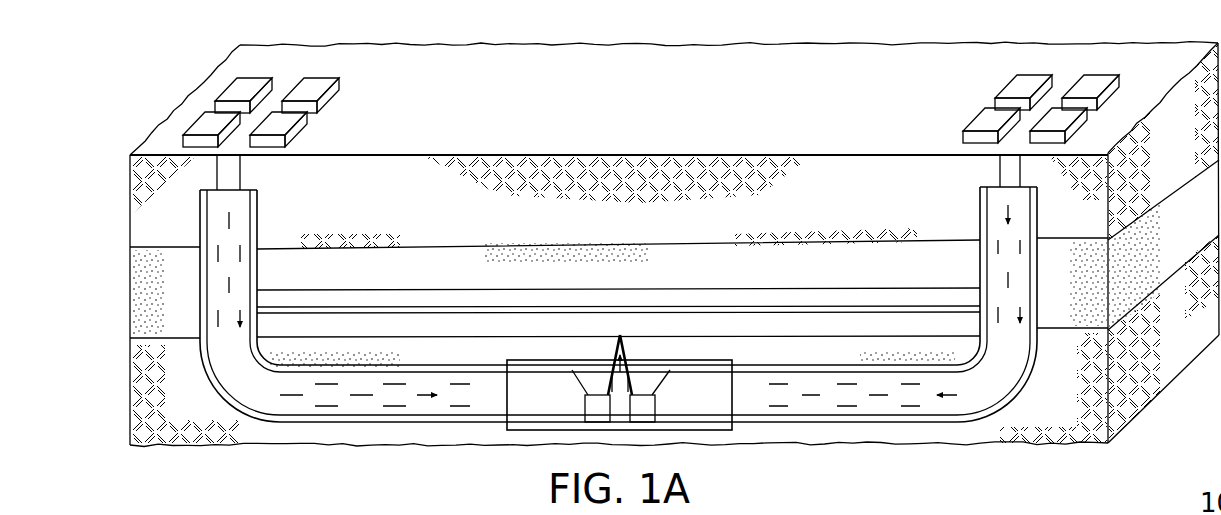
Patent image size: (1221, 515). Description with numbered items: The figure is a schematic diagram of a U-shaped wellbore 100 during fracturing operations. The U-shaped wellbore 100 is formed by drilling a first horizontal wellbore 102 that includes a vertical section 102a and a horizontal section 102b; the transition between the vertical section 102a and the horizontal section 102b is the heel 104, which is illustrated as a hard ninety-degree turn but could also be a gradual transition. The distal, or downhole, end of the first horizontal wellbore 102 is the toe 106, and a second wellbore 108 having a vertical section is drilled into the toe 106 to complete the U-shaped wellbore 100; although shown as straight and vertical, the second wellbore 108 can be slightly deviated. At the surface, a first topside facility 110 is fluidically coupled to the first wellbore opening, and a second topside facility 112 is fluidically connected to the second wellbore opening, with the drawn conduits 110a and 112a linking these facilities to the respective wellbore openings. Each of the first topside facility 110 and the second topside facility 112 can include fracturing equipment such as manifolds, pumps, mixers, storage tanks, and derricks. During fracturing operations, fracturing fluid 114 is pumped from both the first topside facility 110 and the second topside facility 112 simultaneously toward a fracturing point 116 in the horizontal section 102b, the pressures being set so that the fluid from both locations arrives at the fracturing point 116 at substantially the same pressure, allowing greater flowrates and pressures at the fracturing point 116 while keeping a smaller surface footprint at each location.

The U-shaped wellbore 100 is at (173, 61).
The first horizontal wellbore 102 is at (184, 463).
The vertical section 102a is at (245, 279).
The horizontal section 102b is at (363, 408).
The heel 104 is at (222, 382).
The toe 106 is at (1020, 379).
The second wellbore 108 is at (986, 273).
The first topside facility 110 is at (190, 125).
The first conduit 110a is at (240, 172).
The second topside facility 112 is at (974, 120).
The second conduit 112a is at (998, 169).
The fracturing fluid 114 is at (229, 212).
The fracturing point 116 is at (514, 459).